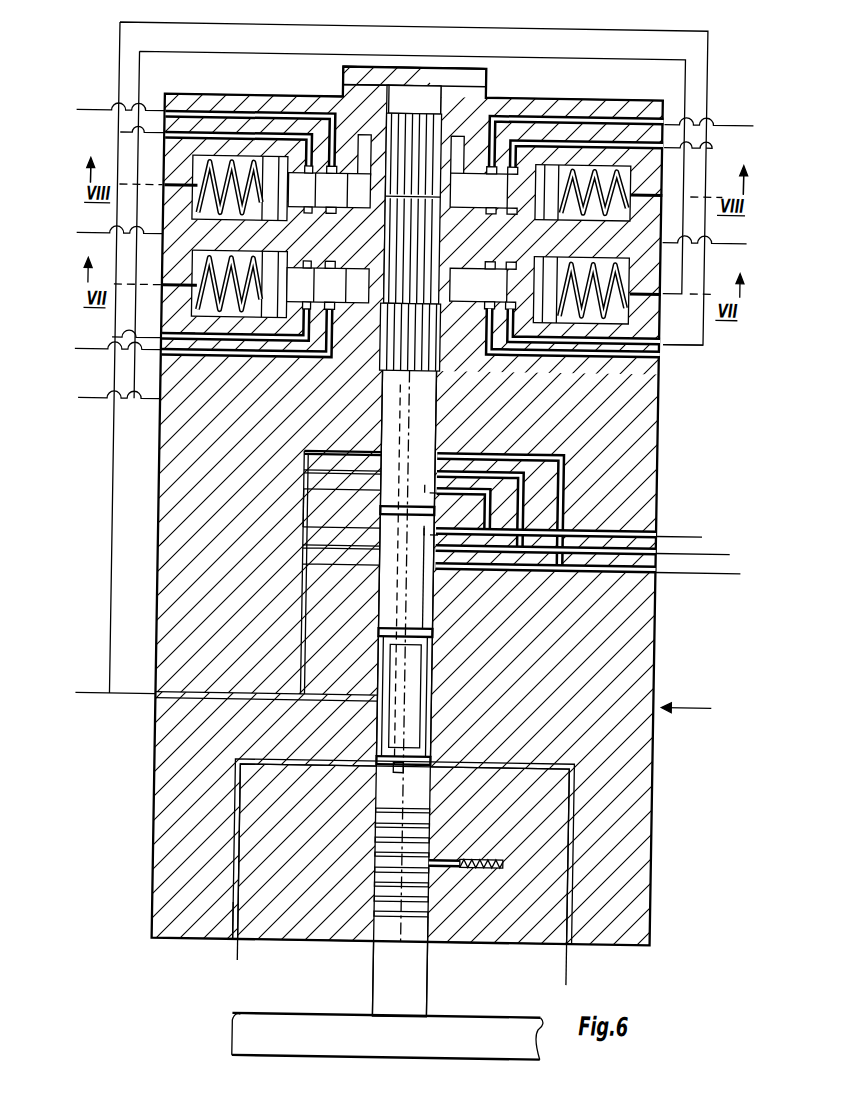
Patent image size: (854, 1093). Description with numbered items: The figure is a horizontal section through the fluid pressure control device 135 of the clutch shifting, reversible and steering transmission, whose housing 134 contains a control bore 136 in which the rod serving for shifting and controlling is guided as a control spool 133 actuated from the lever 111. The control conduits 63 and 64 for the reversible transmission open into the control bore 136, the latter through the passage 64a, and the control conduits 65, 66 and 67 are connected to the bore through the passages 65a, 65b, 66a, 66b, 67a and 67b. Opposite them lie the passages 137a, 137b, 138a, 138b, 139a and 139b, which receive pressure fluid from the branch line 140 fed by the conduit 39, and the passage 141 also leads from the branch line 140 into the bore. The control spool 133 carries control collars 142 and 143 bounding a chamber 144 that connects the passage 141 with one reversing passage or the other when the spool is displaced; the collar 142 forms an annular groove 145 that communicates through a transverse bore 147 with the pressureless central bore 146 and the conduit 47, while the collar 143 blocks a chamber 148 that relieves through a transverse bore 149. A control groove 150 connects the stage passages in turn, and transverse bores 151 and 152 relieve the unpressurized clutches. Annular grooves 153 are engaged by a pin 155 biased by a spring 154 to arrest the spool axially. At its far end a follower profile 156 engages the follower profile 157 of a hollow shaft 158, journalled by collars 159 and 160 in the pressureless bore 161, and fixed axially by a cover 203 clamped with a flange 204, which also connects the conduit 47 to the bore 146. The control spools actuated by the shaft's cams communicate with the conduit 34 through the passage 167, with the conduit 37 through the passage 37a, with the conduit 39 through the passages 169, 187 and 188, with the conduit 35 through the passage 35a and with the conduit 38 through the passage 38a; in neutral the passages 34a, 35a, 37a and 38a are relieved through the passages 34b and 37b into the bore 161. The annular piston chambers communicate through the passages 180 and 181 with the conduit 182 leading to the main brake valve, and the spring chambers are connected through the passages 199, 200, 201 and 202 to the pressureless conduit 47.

The conduit 38 is at (93, 109).
The passage 38a is at (216, 109).
The passage 188 is at (172, 110).
The passage 202 is at (172, 184).
The conduit 182 is at (415, 218).
The passage 181 is at (165, 239).
The passage 200 is at (168, 285).
The passage 169 is at (168, 332).
The conduit 37 is at (194, 326).
The passage 37a is at (168, 354).
The passage 37b is at (350, 250).
The pressureless conduit 47 is at (102, 405).
The conduit 39 is at (101, 693).
The branch line 140 is at (170, 706).
The cover 203 is at (343, 70).
The flange 204 is at (343, 83).
The collar 159 is at (372, 63).
The follower profile 157 is at (412, 106).
The hollow shaft 158 is at (486, 94).
The bore 161 is at (514, 96).
The passage 35a is at (577, 110).
The passage 187 is at (625, 128).
The conduit 35 is at (724, 113).
The passage 201 is at (667, 176).
The passage 180 is at (666, 228).
The passage 199 is at (674, 288).
The conduit 34 is at (737, 352).
The passage 167 is at (620, 342).
The passage 34a is at (646, 397).
The passage 34b is at (481, 246).
The follower profile 156 is at (447, 366).
The collar 160 is at (453, 343).
The control groove 150 is at (405, 656).
The transverse bore 151 is at (432, 483).
The transverse bore 152 is at (415, 576).
The passage 138a is at (340, 445).
The passage 139a is at (370, 470).
The passage 137a is at (328, 508).
The passage 137b is at (329, 523).
The passage 138b is at (332, 548).
The passage 139b is at (372, 564).
The passage 65a is at (462, 511).
The passage 65b is at (448, 531).
The passage 66a is at (523, 467).
The passage 66b is at (481, 579).
The passage 67a is at (484, 437).
The passage 67b is at (442, 595).
The control conduit 65 is at (686, 527).
The control conduit 66 is at (721, 545).
The control conduit 67 is at (715, 566).
The transverse bore 149 is at (445, 625).
The chamber 148 is at (447, 624).
The control collar 143 is at (433, 640).
The chamber 144 is at (446, 692).
The central bore 146 is at (418, 708).
The control collar 142 is at (429, 750).
The annular groove 145 is at (431, 763).
The transverse bore 147 is at (421, 768).
The annular grooves 153 is at (442, 823).
The spring 154 is at (499, 864).
The pin 155 is at (460, 865).
The passage 141 is at (339, 705).
The housing 134 is at (664, 782).
The device 135 is at (686, 699).
The control conduit 64 is at (254, 943).
The passage 64a is at (237, 922).
The control conduit 63 is at (579, 959).
The control bore 136 is at (443, 919).
The control spool 133 is at (398, 982).
The lever 111 is at (521, 1022).